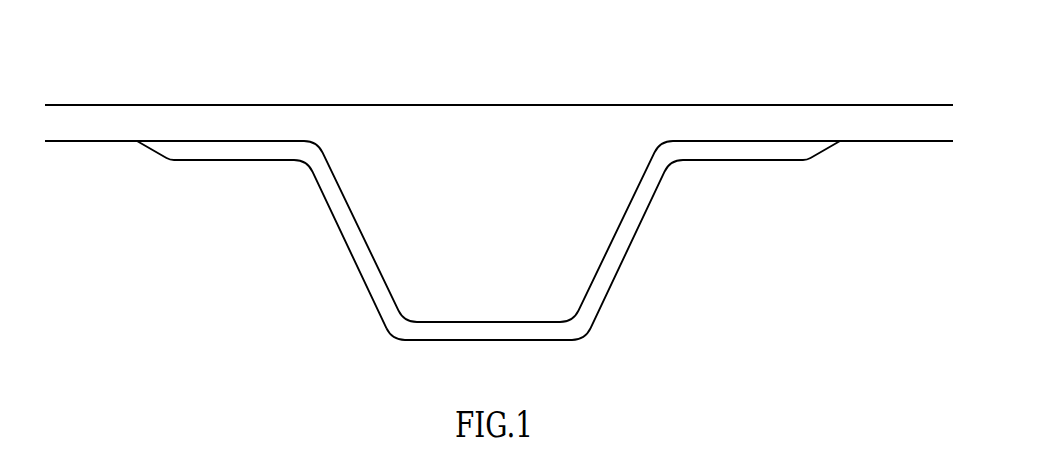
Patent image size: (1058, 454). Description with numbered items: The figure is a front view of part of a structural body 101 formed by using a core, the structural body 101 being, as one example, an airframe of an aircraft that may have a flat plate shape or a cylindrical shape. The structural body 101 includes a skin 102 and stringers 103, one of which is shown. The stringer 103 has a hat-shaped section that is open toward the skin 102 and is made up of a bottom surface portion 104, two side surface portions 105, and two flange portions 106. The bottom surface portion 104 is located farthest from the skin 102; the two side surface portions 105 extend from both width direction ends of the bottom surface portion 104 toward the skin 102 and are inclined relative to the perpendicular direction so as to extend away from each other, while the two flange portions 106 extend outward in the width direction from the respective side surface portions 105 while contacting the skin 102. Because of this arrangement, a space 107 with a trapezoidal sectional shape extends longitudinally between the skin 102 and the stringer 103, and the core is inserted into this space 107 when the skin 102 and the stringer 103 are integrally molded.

The structural body 101 is at (654, 104).
The skin 102 is at (410, 118).
The stringer 103 is at (372, 320).
The bottom surface portion 104 is at (491, 342).
The side surface portion 105 is at (348, 233).
The flange portion 106 is at (217, 150).
The space 107 is at (503, 227).